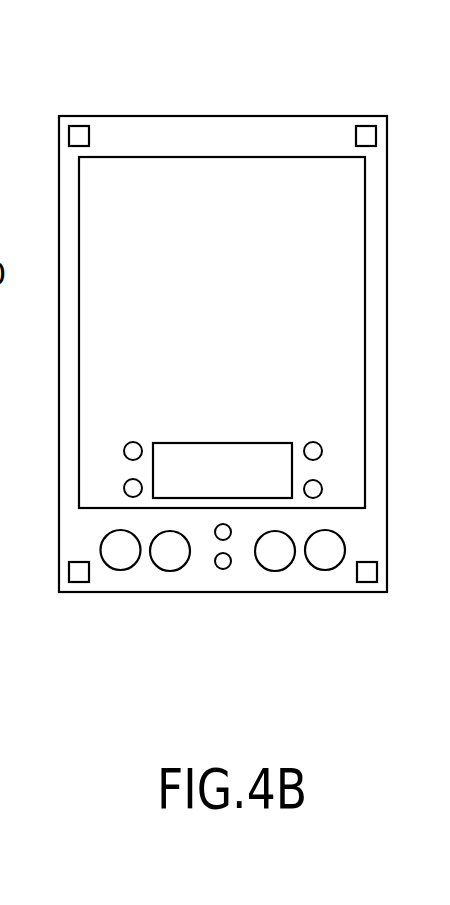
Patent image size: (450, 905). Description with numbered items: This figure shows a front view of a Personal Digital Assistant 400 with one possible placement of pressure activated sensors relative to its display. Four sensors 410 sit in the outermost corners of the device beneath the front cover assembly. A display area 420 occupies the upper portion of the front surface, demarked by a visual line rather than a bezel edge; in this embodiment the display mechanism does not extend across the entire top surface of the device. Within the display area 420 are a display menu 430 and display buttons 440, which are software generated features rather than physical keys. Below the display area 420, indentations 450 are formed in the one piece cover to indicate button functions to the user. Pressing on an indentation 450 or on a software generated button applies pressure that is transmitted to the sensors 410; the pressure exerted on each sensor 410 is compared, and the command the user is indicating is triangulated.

The Personal Digital Assistant 400 is at (235, 703).
The sensors 410 is at (79, 125).
The display area 420 is at (367, 243).
The display menu 430 is at (208, 443).
The display buttons 440 is at (124, 486).
The indentations 450 is at (131, 566).